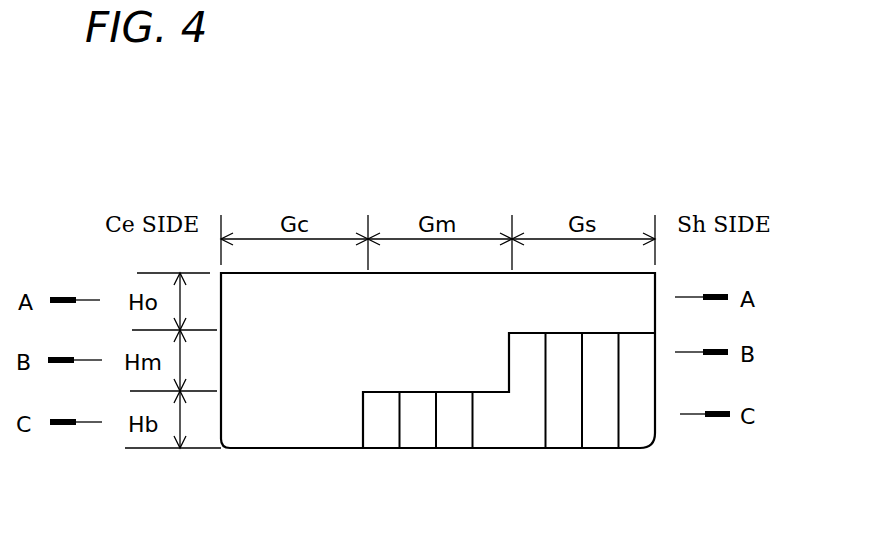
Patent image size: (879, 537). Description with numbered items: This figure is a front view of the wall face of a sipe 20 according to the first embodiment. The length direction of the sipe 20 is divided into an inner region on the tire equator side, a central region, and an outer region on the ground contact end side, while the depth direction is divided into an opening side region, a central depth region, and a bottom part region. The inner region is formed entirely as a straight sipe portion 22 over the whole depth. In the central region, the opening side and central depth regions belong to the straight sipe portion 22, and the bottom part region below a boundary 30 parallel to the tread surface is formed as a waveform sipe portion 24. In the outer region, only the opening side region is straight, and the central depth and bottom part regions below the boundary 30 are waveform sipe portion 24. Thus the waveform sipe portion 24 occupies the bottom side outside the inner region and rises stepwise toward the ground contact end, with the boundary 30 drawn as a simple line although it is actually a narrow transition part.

The sipe 20 is at (457, 168).
The straight sipe portion 22 is at (300, 415).
The waveform sipe portion 24 is at (563, 437).
The boundary 30 is at (423, 390).